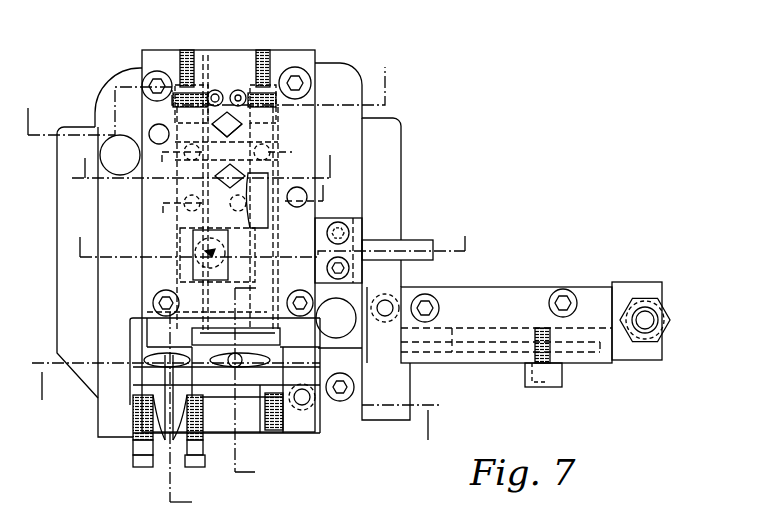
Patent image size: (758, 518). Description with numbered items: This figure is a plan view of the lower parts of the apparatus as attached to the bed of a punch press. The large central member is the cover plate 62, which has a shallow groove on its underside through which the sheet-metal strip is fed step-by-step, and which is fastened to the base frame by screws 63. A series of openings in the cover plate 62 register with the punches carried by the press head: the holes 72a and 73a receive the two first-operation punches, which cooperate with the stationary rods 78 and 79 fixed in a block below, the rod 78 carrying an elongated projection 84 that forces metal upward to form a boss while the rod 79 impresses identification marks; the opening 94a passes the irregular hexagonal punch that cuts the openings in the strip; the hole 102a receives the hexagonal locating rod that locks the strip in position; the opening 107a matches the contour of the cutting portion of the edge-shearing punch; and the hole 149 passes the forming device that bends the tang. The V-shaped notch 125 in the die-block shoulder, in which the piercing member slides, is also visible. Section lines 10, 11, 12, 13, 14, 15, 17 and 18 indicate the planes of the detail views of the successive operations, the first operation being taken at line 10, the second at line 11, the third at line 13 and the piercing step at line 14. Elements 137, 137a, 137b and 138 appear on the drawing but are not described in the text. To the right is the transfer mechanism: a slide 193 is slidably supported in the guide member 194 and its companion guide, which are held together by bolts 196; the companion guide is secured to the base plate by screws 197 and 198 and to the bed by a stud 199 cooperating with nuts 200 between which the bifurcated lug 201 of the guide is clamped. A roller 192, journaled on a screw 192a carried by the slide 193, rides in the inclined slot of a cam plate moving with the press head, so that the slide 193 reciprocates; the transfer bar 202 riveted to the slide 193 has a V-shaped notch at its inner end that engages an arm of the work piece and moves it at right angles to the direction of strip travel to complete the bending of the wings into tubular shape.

The section line 10- 10 is at (28, 104).
The section line 11- 11 is at (162, 150).
The section line 12- 12 is at (85, 152).
The section line 13- 13 is at (163, 200).
The section line 14- 14 is at (465, 230).
The section line 15- 15 is at (42, 366).
The section line 17- 17 is at (262, 288).
The section line 18- 18 is at (197, 502).
The cover plate 62 is at (228, 226).
The screws 63 is at (153, 75).
The hole 73a is at (210, 92).
The hole 72a is at (238, 90).
The stationary rod 79 is at (216, 91).
The stationary rod 78 is at (244, 93).
The elongated projection 84 is at (235, 123).
The opening 94a is at (233, 134).
The hole 102a is at (224, 180).
The opening 107a is at (256, 219).
The hole 149 is at (196, 250).
The V-shaped notch 125 is at (214, 258).
The support bar 137 is at (401, 240).
The lower screw 137a is at (346, 240).
The upper screw 137b is at (340, 222).
The slot 138 is at (362, 216).
The roller 192 is at (563, 381).
The screw 192a is at (544, 388).
The slide 193 is at (499, 330).
The guide member 194 is at (528, 286).
The bolts 196 is at (430, 298).
The screw 197 is at (342, 392).
The screw 198 is at (382, 316).
The stud 199 is at (662, 314).
The nuts 200 is at (648, 321).
The bifurcated lug 201 is at (662, 292).
The transfer bar 202 is at (301, 388).